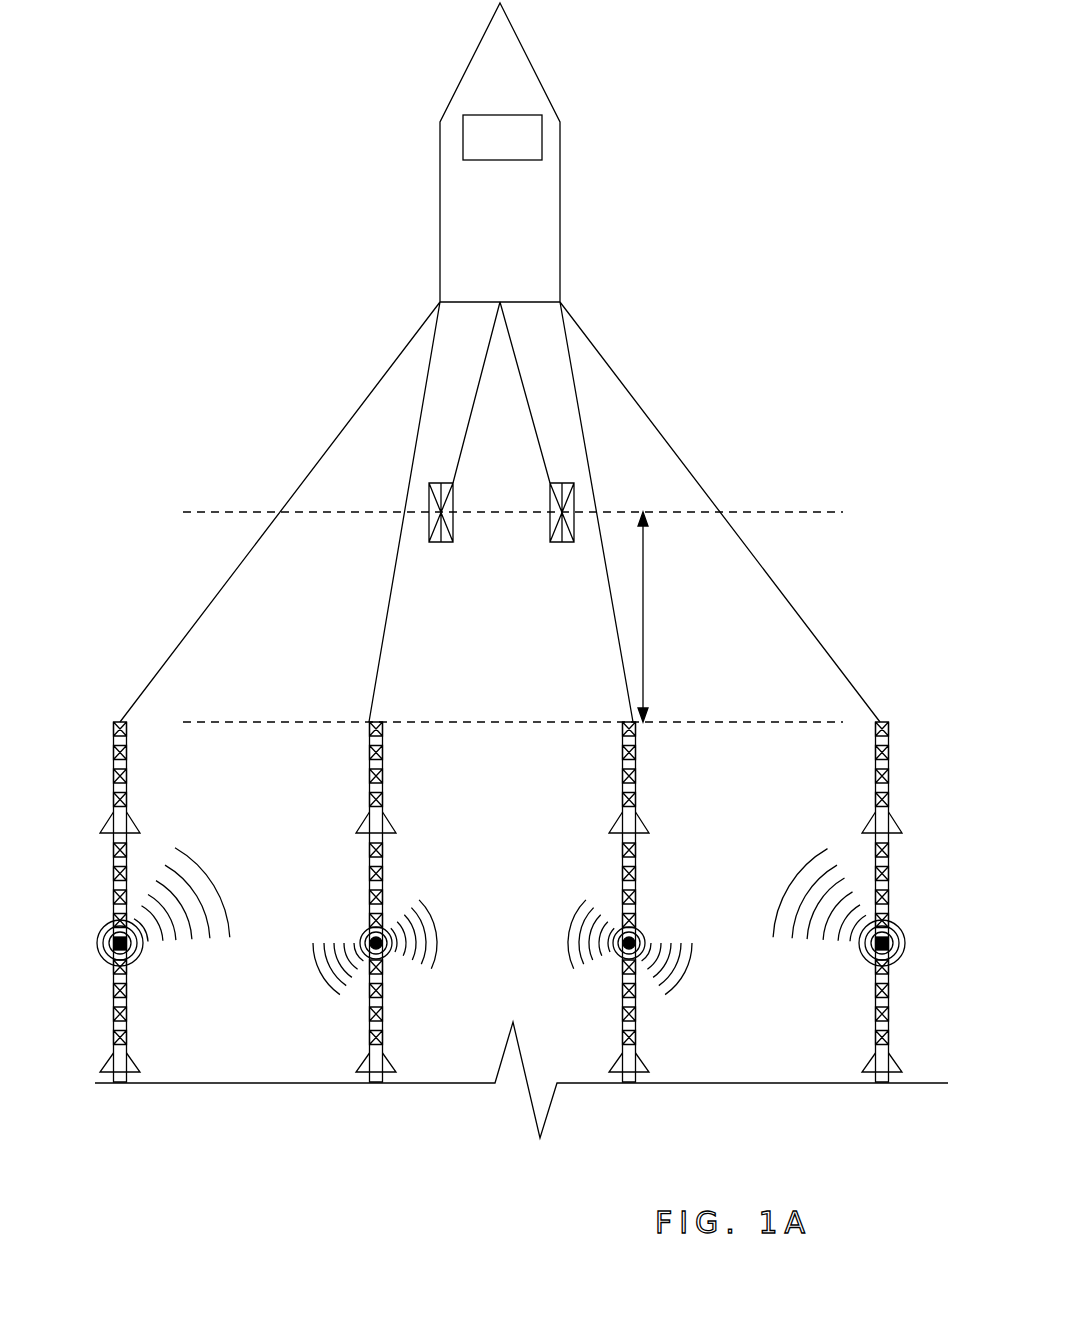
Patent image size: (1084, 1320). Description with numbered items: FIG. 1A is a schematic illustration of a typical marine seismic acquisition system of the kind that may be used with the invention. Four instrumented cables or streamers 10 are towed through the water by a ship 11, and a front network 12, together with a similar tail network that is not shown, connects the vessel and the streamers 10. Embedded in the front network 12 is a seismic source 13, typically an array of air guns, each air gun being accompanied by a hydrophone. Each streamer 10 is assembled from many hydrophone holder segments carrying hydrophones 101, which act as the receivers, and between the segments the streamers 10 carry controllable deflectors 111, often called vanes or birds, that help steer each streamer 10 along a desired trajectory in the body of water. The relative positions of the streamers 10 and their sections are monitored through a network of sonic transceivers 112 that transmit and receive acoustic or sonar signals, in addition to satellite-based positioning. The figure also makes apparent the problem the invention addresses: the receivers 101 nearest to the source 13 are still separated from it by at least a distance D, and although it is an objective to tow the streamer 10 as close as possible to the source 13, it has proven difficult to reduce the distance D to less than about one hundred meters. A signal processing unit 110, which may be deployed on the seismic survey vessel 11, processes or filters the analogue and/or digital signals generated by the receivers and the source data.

The ship 11 is at (490, 258).
The signal processing unit 110 is at (482, 155).
The front network 12 is at (361, 385).
The seismic source 13 is at (549, 512).
The distance D is at (643, 628).
The streamer 10 is at (369, 737).
The hydrophones 101 is at (127, 800).
The controllable deflectors 111 is at (384, 830).
The sonic transceivers 112 is at (100, 940).